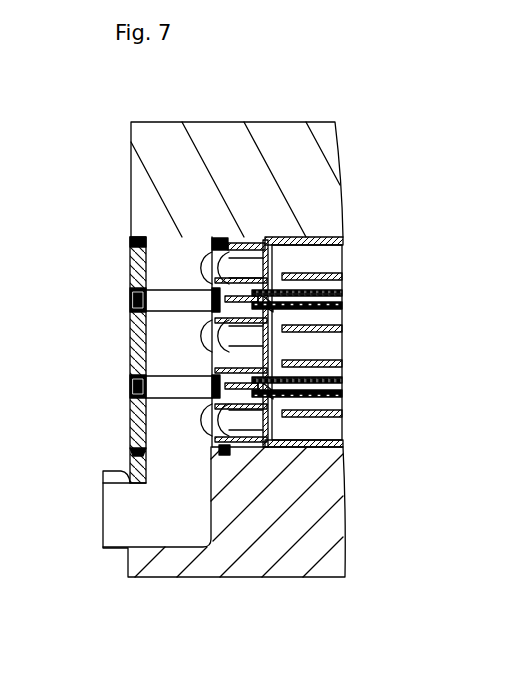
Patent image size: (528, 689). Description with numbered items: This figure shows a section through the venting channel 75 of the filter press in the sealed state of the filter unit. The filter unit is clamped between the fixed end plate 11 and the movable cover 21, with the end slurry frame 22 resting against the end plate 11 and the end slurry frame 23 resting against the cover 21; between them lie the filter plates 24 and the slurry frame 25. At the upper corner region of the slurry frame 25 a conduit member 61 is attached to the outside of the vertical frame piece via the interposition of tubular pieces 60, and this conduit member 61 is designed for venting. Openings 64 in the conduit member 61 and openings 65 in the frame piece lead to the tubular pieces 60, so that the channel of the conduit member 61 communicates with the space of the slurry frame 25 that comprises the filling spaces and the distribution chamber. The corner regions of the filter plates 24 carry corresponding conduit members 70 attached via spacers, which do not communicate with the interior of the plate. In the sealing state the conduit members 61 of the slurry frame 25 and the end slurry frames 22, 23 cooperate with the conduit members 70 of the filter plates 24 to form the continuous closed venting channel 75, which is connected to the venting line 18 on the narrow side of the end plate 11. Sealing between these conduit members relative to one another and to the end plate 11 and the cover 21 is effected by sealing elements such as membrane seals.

The fixed end plate 11 is at (322, 532).
The venting line 18 is at (138, 512).
The movable cover 21 is at (315, 142).
The end slurry frame 22 is at (350, 445).
The end slurry frame 23 is at (300, 235).
The filter plate 24 is at (345, 297).
The slurry frame 25 is at (345, 347).
The tubular piece 60 is at (243, 432).
The conduit member 61 is at (130, 410).
The opening 64 is at (268, 423).
The opening 65 is at (212, 418).
The conduit member 70 is at (132, 387).
The venting channel 75 is at (115, 354).